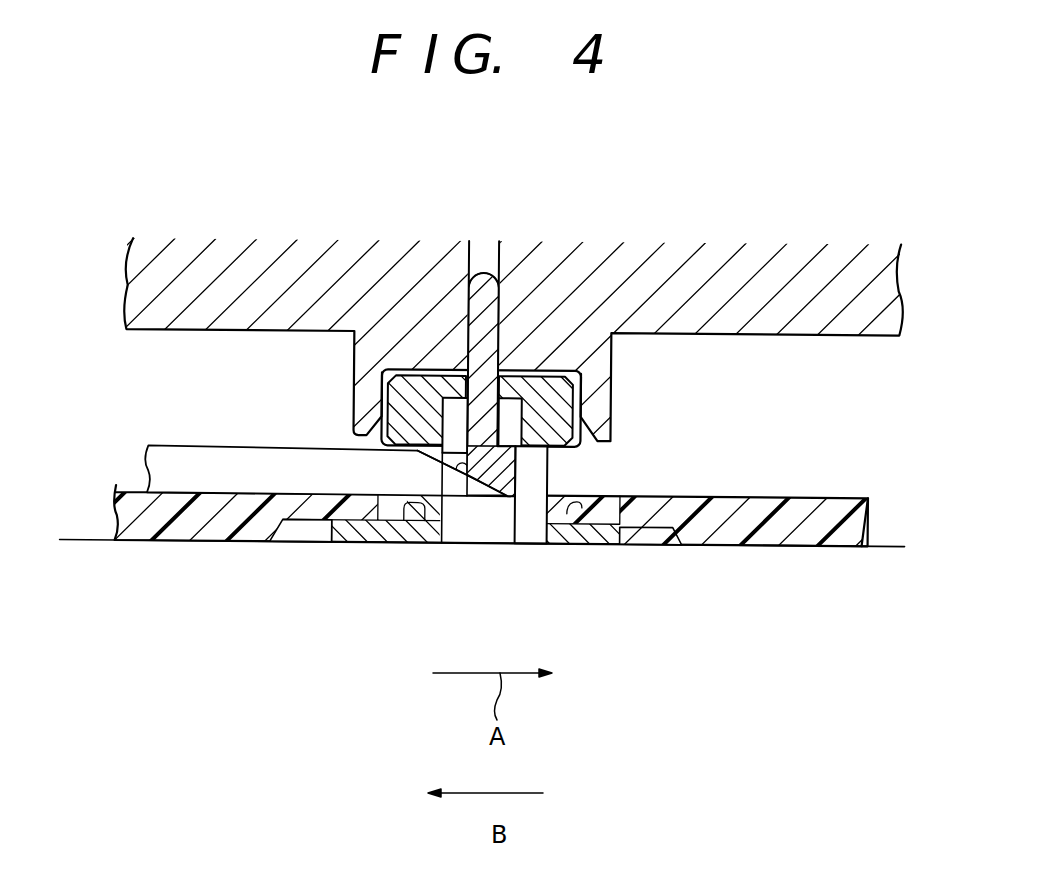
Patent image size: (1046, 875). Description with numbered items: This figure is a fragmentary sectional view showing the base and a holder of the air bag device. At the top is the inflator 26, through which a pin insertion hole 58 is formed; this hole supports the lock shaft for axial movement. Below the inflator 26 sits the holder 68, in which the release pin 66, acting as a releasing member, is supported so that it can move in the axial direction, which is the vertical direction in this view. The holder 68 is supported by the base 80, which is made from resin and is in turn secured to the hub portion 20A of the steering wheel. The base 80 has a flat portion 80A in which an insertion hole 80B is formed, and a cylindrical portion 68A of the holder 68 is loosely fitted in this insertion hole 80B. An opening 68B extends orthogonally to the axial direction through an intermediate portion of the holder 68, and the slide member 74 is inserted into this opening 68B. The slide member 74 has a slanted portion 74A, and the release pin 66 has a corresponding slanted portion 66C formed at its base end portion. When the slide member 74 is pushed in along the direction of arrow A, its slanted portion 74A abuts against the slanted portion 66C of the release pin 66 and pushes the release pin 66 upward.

The inflator 26 is at (855, 337).
The pin insertion hole 58 is at (534, 368).
The release pin 66 is at (520, 470).
The slanted portion 66C is at (497, 450).
The holder 68 is at (568, 447).
The cylindrical portion 68A is at (565, 547).
The opening 68B is at (402, 522).
The slide member 74 is at (327, 515).
The slanted portion 74A is at (473, 443).
The base 80 is at (489, 472).
The flat portion 80A is at (822, 496).
The insertion hole 80B is at (565, 496).
The hub portion 20A is at (893, 546).